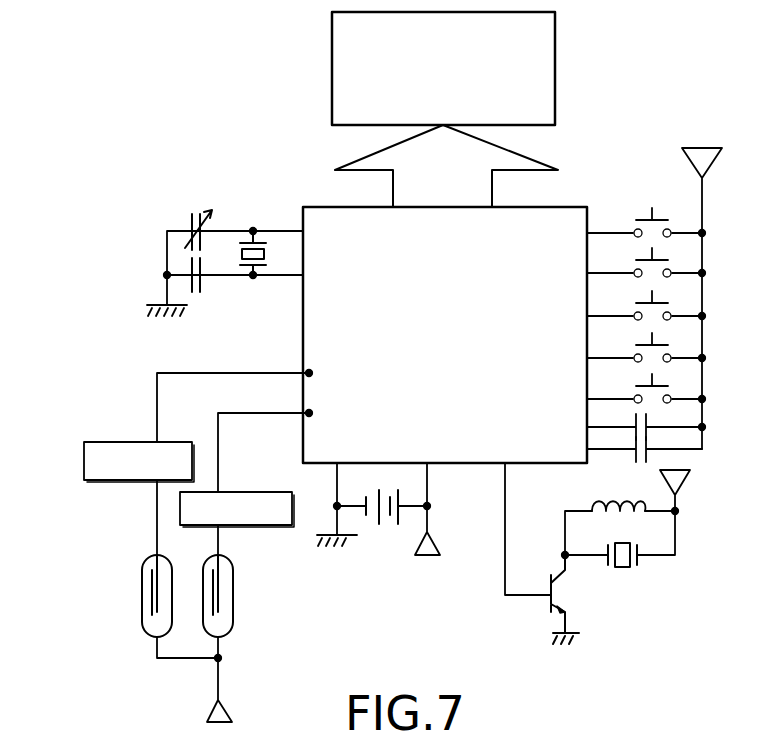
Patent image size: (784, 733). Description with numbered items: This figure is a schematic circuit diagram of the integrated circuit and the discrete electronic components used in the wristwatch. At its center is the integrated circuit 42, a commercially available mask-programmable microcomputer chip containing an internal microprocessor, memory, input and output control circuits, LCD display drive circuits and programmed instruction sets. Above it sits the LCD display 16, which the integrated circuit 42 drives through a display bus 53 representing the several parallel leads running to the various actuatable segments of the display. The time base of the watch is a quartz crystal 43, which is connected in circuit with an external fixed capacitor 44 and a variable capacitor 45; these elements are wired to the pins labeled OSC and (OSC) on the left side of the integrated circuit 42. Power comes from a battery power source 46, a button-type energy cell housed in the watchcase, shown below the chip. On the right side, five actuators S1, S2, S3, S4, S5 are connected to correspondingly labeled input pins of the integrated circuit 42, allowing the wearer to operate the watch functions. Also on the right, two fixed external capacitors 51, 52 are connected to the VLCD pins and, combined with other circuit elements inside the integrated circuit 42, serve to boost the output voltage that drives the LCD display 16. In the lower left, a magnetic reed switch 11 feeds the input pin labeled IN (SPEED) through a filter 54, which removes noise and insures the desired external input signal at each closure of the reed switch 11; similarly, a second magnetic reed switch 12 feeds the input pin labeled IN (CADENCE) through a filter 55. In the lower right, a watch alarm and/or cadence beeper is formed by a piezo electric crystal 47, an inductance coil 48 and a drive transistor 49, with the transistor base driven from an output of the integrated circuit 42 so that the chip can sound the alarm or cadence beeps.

The LCD display 16 is at (332, 73).
The display bus 53 is at (494, 190).
The integrated circuit 42 is at (445, 335).
The variable capacitor 45 is at (191, 222).
The external fixed capacitor 44 is at (204, 286).
The quartz crystal 43 is at (265, 262).
The actuator S1 is at (668, 220).
The actuator S2 is at (668, 260).
The actuator S3 is at (668, 303).
The actuator S4 is at (668, 345).
The actuator S5 is at (668, 386).
The fixed external capacitor 52 is at (648, 418).
The fixed external capacitor 51 is at (648, 458).
The battery power source 46 is at (400, 520).
The filter 54 is at (84, 464).
The filter 55 is at (262, 527).
The magnetic reed switch 11 is at (142, 604).
The magnetic reed switch 12 is at (233, 605).
The inductance coil 48 is at (600, 507).
The piezo electric crystal 47 is at (625, 567).
The drive transistor 49 is at (552, 604).